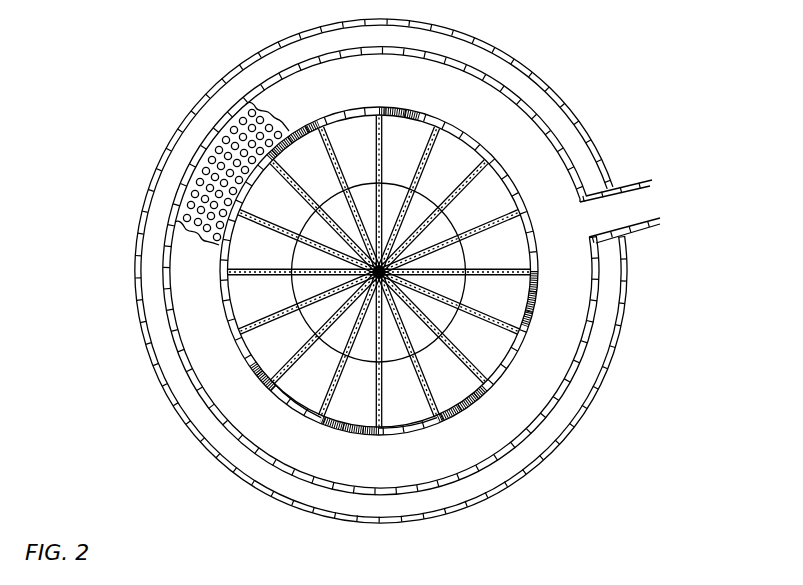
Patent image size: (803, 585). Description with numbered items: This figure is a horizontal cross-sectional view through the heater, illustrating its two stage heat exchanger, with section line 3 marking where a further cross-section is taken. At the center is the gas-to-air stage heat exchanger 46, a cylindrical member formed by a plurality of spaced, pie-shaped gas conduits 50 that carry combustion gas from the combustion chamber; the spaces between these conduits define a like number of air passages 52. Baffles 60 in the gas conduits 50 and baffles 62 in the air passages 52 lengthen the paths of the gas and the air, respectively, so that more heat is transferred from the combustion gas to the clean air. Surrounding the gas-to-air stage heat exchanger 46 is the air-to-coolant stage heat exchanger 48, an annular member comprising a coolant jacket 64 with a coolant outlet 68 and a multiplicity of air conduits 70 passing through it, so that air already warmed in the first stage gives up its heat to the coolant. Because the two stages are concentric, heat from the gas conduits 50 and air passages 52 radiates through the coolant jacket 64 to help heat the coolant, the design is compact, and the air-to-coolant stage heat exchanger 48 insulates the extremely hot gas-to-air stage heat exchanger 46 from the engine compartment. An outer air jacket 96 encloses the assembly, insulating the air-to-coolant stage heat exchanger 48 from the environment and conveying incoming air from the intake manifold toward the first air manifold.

The gas-to-air stage heat exchanger 46 is at (497, 347).
The air-to-coolant stage heat exchanger 48 is at (492, 113).
The gas conduits 50 is at (353, 408).
The air passages 52 is at (298, 393).
The baffles 60 is at (298, 344).
The baffles 62 is at (300, 288).
The coolant jacket 64 is at (552, 412).
The coolant outlet 68 is at (632, 213).
The air conduits 70 is at (227, 130).
The air jacket 96 is at (575, 115).
The section line 3- 3 is at (645, 204).